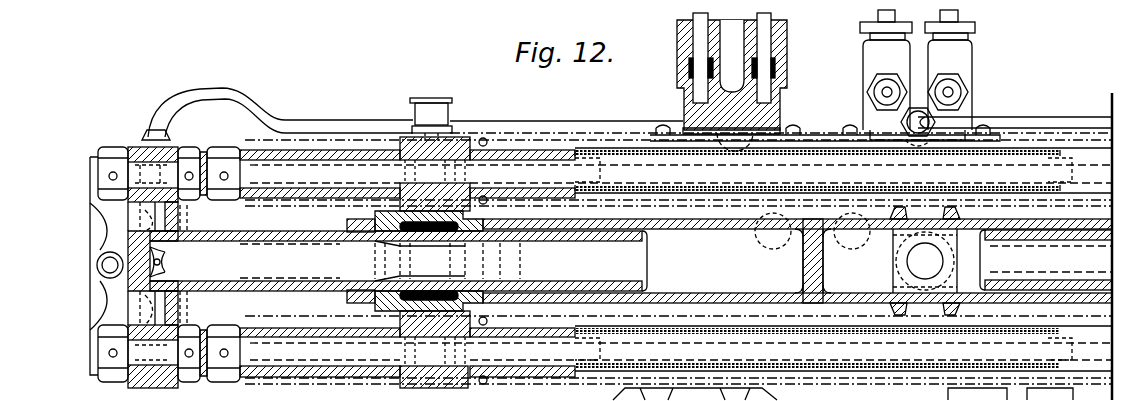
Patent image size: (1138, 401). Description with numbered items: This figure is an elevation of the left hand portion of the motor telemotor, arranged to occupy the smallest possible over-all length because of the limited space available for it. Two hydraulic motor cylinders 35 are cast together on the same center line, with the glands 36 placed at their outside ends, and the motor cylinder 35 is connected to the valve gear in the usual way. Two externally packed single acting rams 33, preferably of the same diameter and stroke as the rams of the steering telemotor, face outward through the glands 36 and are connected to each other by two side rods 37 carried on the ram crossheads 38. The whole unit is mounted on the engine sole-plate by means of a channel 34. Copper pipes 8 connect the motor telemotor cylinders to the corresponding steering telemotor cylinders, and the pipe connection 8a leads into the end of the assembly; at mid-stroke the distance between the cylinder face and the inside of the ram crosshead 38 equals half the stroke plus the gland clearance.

The copper pipe 8 is at (366, 120).
The pipe port 8a is at (152, 264).
The externally packed single acting ram 33 is at (645, 259).
The channel 34 is at (97, 293).
The motor cylinder 35 is at (797, 261).
The gland 36 is at (380, 283).
The side rod 37 is at (676, 266).
The ram crosshead 38 is at (165, 262).